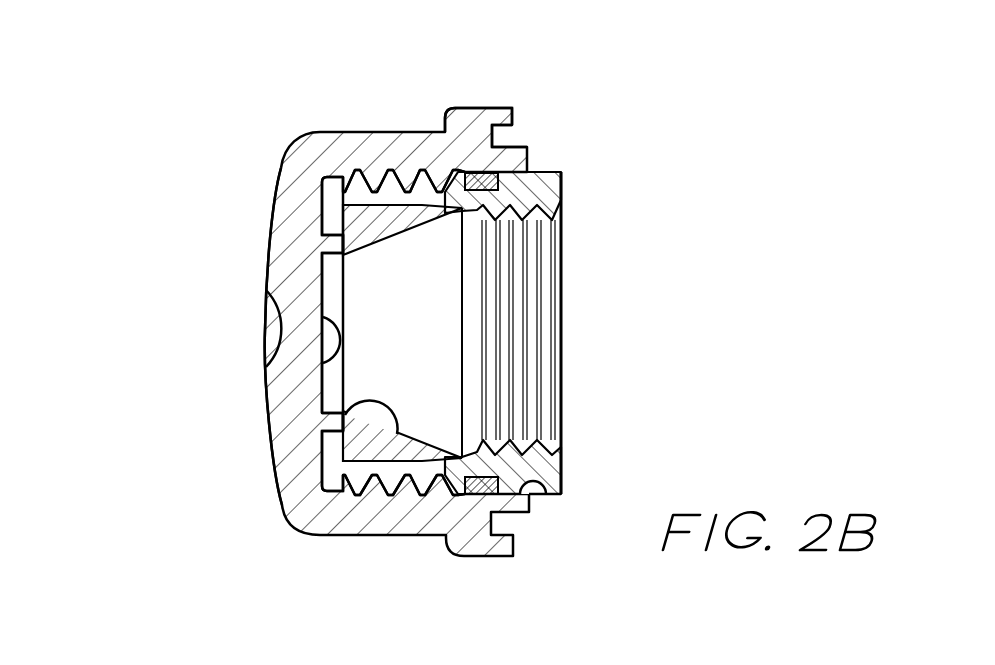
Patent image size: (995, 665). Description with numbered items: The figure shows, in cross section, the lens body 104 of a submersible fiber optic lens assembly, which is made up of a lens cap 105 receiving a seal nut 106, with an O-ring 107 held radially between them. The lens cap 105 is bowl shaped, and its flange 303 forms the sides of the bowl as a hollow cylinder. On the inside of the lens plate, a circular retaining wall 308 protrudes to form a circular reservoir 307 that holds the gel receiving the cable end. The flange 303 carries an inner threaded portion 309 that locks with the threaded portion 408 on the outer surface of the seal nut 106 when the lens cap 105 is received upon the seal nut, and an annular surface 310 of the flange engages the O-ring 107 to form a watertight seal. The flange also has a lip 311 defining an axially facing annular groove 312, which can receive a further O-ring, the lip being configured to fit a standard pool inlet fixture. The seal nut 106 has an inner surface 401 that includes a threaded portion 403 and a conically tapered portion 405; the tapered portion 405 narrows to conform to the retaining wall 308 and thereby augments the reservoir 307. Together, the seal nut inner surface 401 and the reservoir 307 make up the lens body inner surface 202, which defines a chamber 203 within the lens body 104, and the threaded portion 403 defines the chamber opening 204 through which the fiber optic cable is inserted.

The lens body 104 is at (178, 224).
The lens cap 105 is at (287, 247).
The seal nut 106 is at (443, 247).
The O-ring 107 is at (482, 480).
The inner surface 202 is at (370, 397).
The chamber 203 is at (455, 332).
The opening 204 is at (561, 382).
The flange 303 is at (407, 518).
The reservoir 307 is at (343, 357).
The retaining wall 308 is at (322, 272).
The inner threaded portion 309 is at (420, 182).
The annular surface 310 is at (547, 494).
The lip 311 is at (500, 108).
The annular groove 312 is at (495, 137).
The inner surface 401 is at (443, 447).
The threaded portion 403 is at (535, 313).
The conically tapered portion 405 is at (373, 272).
The threaded portion 408 is at (395, 487).